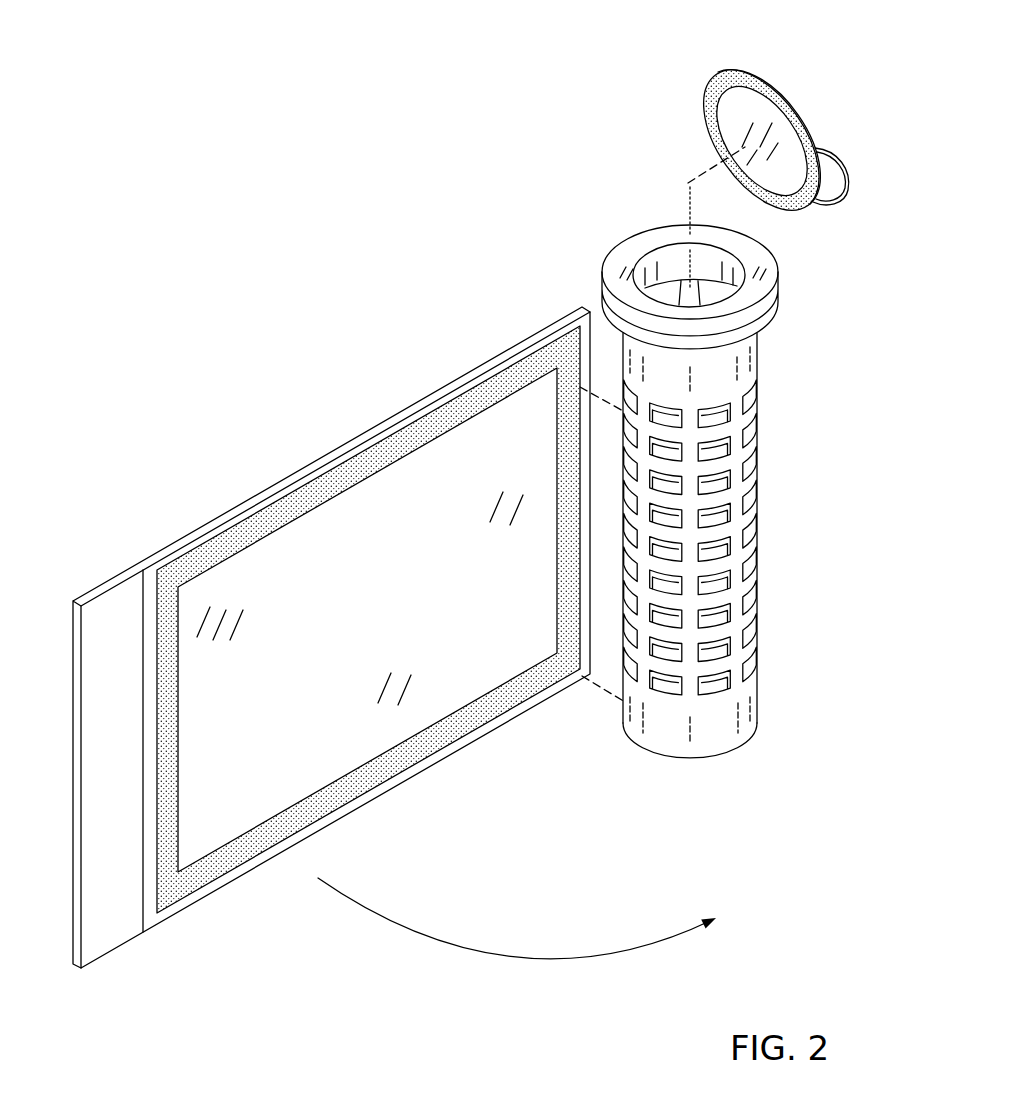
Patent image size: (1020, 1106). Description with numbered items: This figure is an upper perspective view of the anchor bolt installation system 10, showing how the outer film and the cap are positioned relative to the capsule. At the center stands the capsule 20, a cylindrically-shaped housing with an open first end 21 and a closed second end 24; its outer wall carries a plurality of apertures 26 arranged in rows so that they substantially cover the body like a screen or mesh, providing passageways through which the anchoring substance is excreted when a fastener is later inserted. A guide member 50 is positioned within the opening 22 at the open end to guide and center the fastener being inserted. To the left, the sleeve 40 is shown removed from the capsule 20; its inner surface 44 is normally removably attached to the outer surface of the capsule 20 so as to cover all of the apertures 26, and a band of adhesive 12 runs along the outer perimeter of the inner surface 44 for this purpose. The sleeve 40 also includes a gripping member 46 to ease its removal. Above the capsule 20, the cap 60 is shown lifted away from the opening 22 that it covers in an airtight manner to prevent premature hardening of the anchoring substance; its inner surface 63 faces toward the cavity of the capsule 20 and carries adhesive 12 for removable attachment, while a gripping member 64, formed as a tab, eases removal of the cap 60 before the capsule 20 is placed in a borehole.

The anchor bolt installation system 10 is at (284, 98).
The adhesive 12 is at (376, 462).
The capsule 20 is at (714, 388).
The open first end 21 is at (756, 318).
The opening 22 is at (697, 272).
The closed second end 24 is at (722, 732).
The apertures 26 is at (712, 522).
The sleeve 40 is at (225, 510).
The inner surface 44 is at (379, 643).
The gripping member 46 is at (97, 896).
The guide member 50 is at (620, 243).
The cap 60 is at (717, 77).
The inner surface 63 is at (760, 113).
The gripping member 64 is at (836, 160).